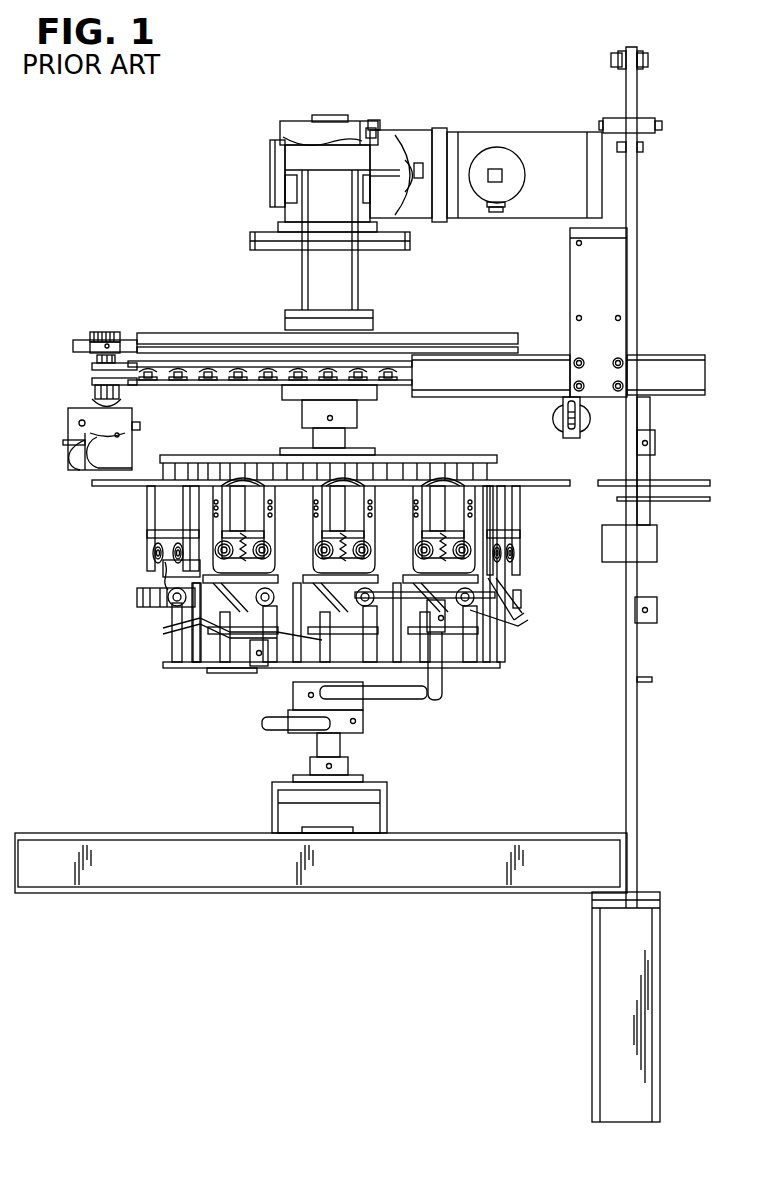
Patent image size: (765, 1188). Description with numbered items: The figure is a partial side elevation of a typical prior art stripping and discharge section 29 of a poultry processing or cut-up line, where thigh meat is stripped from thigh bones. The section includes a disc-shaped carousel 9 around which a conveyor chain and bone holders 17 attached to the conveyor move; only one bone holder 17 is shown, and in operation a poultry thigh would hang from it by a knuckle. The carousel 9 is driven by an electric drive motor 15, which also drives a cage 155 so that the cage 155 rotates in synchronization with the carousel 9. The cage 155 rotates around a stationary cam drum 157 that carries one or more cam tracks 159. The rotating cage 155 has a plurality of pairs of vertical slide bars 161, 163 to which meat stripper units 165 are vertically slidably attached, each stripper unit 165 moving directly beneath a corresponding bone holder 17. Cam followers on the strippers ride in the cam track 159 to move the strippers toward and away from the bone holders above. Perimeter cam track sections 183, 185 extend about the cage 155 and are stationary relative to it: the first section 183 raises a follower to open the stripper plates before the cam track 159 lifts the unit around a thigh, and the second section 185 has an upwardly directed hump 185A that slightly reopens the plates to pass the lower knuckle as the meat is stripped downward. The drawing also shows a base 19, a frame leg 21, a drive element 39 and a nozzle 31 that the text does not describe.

The stripping and discharge section 29 is at (124, 200).
The electric drive motor 15 is at (398, 140).
The carousel 9 is at (228, 372).
The drive gear and shaft 39 is at (105, 330).
The bone holder 17 is at (68, 420).
The nozzle 31 is at (120, 462).
The cam track 159 is at (303, 540).
The meat stripper unit 165 is at (420, 572).
The cam track section 183 is at (497, 618).
The upwardly directed hump 185A is at (175, 632).
The cam track section 185 is at (258, 628).
The vertical slide bar 161 is at (178, 655).
The vertical slide bar 163 is at (203, 658).
The stationary cam drum 157 is at (290, 678).
The cage 155 is at (477, 670).
The base plate 19 is at (160, 833).
The frame leg 21 is at (592, 1005).